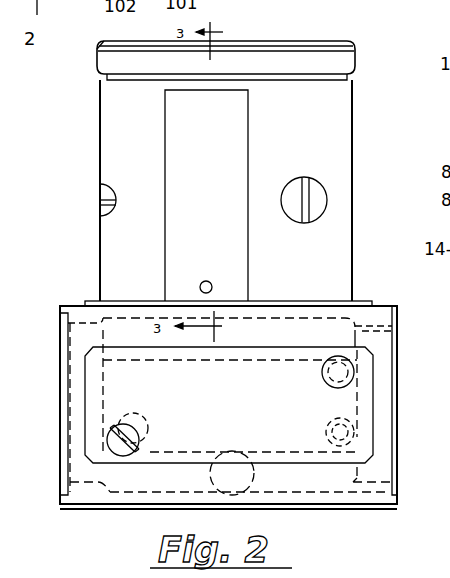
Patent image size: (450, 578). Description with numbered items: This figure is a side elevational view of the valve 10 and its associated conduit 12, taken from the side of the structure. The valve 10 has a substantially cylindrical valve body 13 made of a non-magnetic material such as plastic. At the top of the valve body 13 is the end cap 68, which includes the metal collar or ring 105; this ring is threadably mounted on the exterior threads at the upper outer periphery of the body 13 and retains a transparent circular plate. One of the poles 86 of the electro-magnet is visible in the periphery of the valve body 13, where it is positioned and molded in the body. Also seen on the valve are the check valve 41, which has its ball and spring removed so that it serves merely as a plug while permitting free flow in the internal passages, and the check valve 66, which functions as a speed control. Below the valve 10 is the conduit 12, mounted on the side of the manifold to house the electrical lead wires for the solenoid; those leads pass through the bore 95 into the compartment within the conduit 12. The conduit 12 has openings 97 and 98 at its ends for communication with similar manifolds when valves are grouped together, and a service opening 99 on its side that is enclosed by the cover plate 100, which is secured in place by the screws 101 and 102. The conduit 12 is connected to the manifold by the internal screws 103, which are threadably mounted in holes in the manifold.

The valve 10 is at (355, 130).
The conduit 12 is at (398, 380).
The valve body 13 is at (346, 234).
The check valve 41 is at (322, 201).
The check valve 66 is at (104, 212).
The end cap 68 is at (356, 33).
The pole 86 is at (238, 142).
The bore 95 is at (255, 478).
The opening 97 is at (63, 337).
The opening 98 is at (397, 337).
The service opening 99 is at (173, 356).
The cover plate 100 is at (253, 353).
The screw 101 is at (320, 372).
The screw 102 is at (125, 458).
The internal screw 103 is at (358, 432).
The metal collar or ring 105 is at (346, 60).